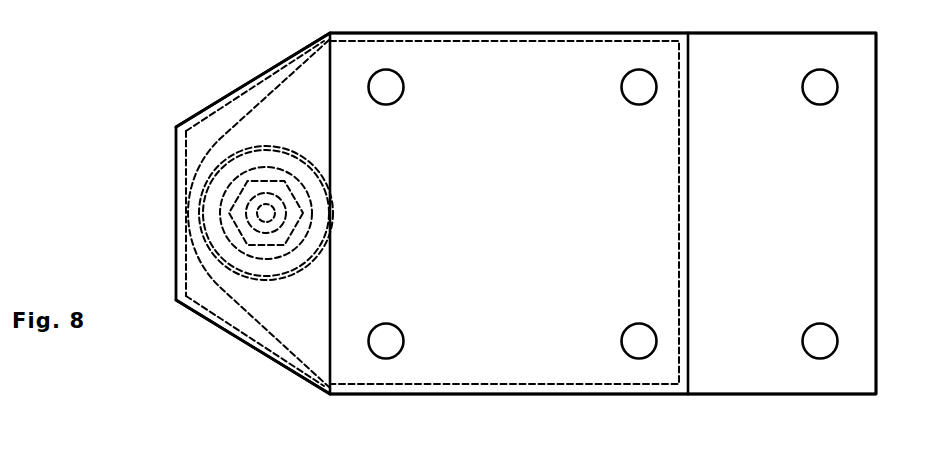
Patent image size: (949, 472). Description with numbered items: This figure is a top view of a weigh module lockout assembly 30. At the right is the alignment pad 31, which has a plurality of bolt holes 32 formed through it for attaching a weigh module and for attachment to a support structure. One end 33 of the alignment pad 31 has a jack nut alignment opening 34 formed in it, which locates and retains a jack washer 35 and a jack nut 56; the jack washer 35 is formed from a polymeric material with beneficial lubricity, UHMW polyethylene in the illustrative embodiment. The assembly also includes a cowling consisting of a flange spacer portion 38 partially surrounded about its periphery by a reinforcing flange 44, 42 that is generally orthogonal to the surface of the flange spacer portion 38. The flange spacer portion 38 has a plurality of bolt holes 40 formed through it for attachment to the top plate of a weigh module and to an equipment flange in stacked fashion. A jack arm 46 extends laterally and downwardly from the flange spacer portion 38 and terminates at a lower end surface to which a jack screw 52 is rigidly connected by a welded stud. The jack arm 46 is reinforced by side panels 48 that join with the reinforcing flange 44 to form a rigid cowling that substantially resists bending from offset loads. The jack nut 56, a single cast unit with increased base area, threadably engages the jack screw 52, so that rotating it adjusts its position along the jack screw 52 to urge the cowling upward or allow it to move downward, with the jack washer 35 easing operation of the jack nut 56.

The weigh module lockout assembly 30 is at (93, 184).
The alignment pad 31 is at (878, 193).
The bolt holes 32 is at (816, 102).
The end of the alignment pad 33 is at (222, 135).
The jack nut alignment opening 34 is at (297, 152).
The jack washer 35 is at (318, 168).
The flange spacer portion 38 is at (473, 199).
The bolt holes 40 is at (394, 102).
The reinforcing flange 42 is at (690, 216).
The reinforcing flange 44 is at (530, 41).
The jack arm 46 is at (183, 267).
The side panels 48 is at (249, 91).
The jack screw 52 is at (270, 240).
The jack nut 56 is at (292, 230).